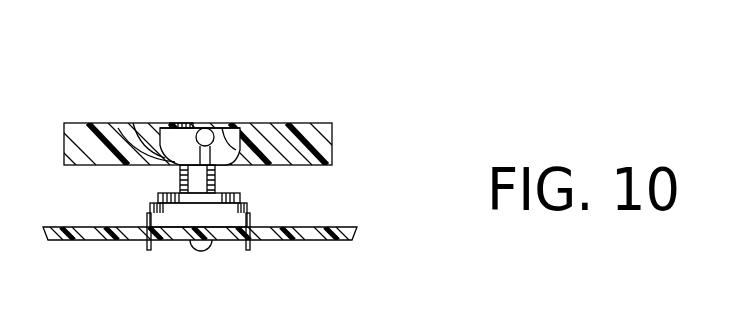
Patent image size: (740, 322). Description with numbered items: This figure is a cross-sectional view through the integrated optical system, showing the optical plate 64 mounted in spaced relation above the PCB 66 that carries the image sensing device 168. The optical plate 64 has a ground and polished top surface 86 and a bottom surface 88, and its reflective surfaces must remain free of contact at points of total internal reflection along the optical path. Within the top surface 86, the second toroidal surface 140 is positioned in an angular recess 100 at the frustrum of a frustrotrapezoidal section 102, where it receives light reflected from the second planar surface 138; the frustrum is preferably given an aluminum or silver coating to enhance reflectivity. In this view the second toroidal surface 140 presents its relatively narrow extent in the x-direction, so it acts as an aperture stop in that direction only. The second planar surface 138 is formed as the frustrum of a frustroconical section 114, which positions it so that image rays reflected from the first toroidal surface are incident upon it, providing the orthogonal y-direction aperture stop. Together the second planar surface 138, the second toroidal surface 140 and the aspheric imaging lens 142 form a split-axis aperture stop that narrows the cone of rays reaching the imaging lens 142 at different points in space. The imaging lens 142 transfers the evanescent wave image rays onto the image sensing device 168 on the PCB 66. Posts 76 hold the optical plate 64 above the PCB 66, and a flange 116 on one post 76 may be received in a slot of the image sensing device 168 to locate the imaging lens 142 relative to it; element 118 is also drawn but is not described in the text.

The optical plate 64 is at (333, 142).
The PCB 66 is at (80, 240).
The posts 76 is at (178, 181).
The top surface 86 is at (133, 123).
The bottom surface 88 is at (82, 167).
The angular recess 100 is at (220, 127).
The frustrotrapezoidal section 102 is at (193, 123).
The frustroconical section 114 is at (250, 142).
The flange 116 is at (175, 194).
The pin 118 is at (202, 251).
The second planar surface 138 is at (118, 128).
The second toroidal surface 140 is at (203, 127).
The aspheric imaging lens 142 is at (216, 183).
The image sensing device 168 is at (258, 210).